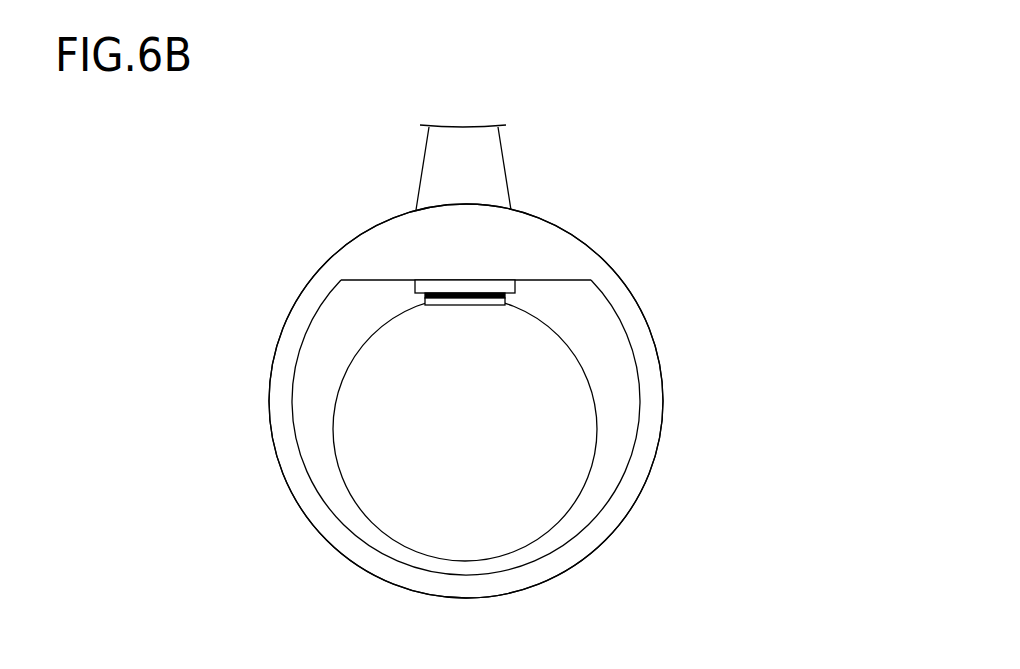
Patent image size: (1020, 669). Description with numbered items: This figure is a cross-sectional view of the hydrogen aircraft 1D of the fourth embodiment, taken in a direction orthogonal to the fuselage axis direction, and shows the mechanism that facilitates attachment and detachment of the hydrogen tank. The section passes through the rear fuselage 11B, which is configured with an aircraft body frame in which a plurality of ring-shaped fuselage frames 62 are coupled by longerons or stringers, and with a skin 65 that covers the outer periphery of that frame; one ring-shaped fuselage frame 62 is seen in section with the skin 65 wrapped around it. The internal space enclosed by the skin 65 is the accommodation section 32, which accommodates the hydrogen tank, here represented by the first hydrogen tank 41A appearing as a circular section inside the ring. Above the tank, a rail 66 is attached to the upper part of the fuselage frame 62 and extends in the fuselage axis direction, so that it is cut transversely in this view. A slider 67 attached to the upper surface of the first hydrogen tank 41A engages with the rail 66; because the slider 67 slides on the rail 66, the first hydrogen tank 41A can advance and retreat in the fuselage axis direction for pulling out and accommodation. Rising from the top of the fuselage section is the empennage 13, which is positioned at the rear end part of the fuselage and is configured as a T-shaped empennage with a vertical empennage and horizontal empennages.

The hydrogen aircraft 1D is at (709, 189).
The rear fuselage 11B is at (683, 357).
The empennage 13 is at (512, 169).
The accommodation section 32 is at (322, 348).
The first hydrogen tank 41A is at (575, 437).
The fuselage frame 62 is at (553, 246).
The skin 65 is at (262, 400).
The rail 66 is at (450, 283).
The slider 67 is at (466, 305).